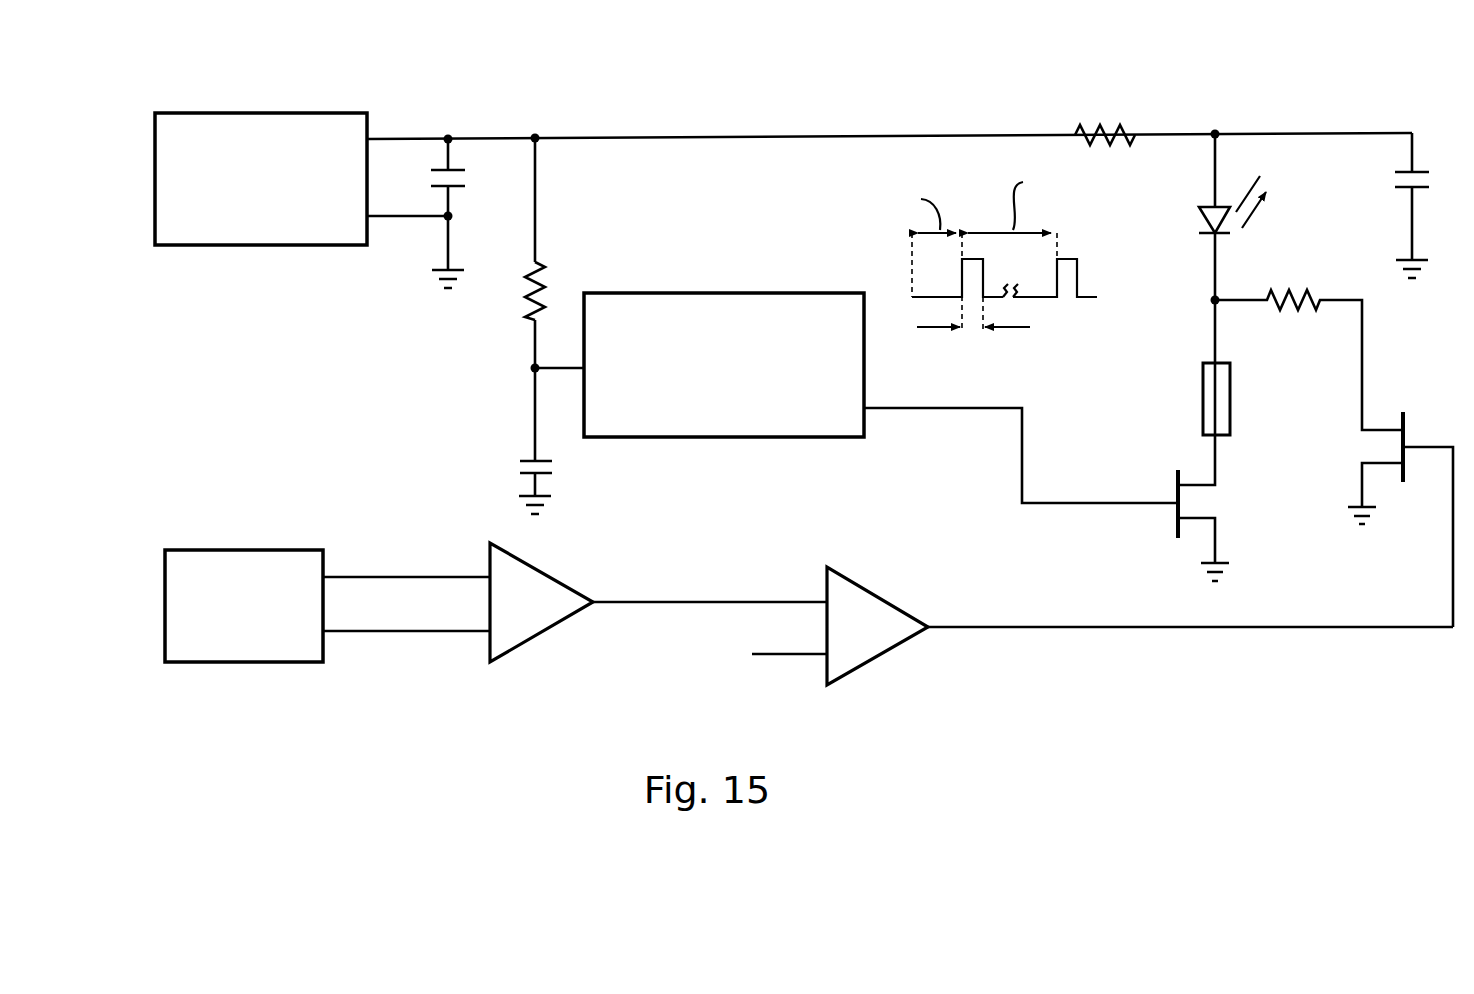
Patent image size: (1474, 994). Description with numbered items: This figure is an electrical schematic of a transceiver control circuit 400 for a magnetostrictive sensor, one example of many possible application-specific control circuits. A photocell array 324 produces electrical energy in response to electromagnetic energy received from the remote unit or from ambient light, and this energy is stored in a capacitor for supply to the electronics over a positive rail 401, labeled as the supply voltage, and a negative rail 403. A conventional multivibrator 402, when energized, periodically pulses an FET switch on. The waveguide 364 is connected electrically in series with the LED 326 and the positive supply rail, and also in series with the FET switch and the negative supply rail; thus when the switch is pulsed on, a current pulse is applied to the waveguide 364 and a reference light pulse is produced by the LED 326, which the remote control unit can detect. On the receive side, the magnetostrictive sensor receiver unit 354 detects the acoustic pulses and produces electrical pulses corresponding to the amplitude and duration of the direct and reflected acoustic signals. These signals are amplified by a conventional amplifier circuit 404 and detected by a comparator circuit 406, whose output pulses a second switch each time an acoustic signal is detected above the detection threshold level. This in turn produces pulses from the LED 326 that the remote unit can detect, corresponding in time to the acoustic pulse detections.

The transceiver control circuit 400 is at (1060, 66).
The positive rail 401 is at (872, 136).
The photocell array 324 is at (262, 246).
The negative rail 403 is at (442, 265).
The multivibrator 402 is at (725, 438).
The LED 326 is at (1208, 236).
The waveguide 364 is at (1230, 398).
The magnetostrictive sensor receiver unit 354 is at (247, 550).
The amplifier circuit 404 is at (545, 633).
The comparator circuit 406 is at (877, 660).